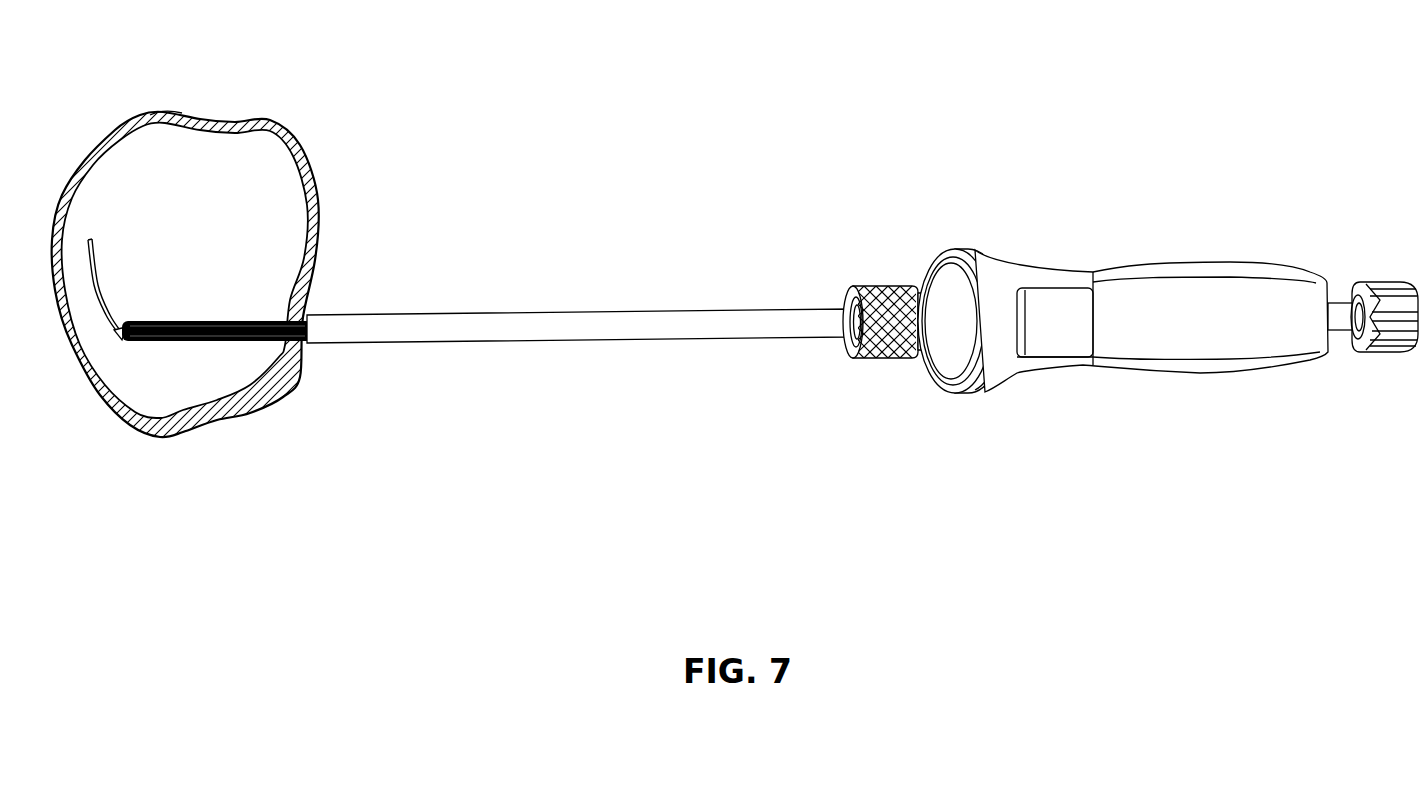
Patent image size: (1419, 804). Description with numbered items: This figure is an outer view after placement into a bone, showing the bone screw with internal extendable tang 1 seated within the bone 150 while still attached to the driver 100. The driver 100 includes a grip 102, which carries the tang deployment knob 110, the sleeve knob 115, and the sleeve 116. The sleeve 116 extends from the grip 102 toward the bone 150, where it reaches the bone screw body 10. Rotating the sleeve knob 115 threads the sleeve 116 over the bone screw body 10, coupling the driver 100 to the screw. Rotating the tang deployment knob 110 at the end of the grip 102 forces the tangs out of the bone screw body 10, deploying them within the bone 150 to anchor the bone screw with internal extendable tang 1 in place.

The bone screw with internal extendable tang 1 is at (200, 360).
The bone screw body 10 is at (229, 341).
The driver 100 is at (863, 232).
The grip 102 is at (1165, 277).
The tang deployment knob 110 is at (1393, 352).
The sleeve knob 115 is at (889, 359).
The sleeve 116 is at (634, 309).
The bone 150 is at (322, 108).